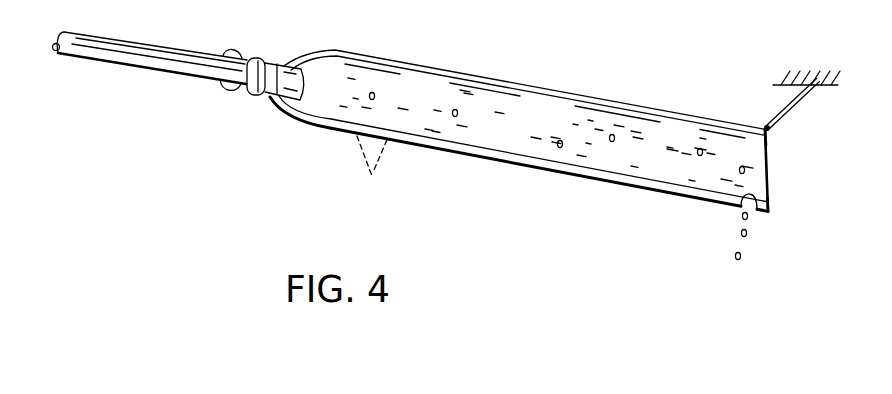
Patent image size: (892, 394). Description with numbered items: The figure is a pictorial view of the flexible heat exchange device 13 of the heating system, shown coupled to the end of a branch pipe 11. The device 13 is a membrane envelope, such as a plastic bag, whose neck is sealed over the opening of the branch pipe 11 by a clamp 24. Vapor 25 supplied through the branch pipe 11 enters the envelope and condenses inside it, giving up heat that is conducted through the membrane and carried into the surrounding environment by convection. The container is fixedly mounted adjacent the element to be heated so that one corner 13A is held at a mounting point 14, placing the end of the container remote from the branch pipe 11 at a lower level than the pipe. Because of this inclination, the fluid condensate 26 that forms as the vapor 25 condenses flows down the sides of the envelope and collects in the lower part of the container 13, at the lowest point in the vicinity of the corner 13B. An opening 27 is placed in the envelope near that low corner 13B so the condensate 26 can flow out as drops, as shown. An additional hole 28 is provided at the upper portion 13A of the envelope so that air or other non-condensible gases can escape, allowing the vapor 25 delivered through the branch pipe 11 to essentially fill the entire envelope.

The branch pipe 11 is at (151, 70).
The heat exchange device 13 is at (566, 84).
The corner 13A is at (782, 136).
The corner 13B is at (779, 201).
The mounting point 14 is at (808, 95).
The clamp 24 is at (267, 59).
The vapor 25 is at (418, 100).
The fluid condensate 26 is at (741, 234).
The opening 27 is at (741, 206).
The additional hole 28 is at (764, 126).